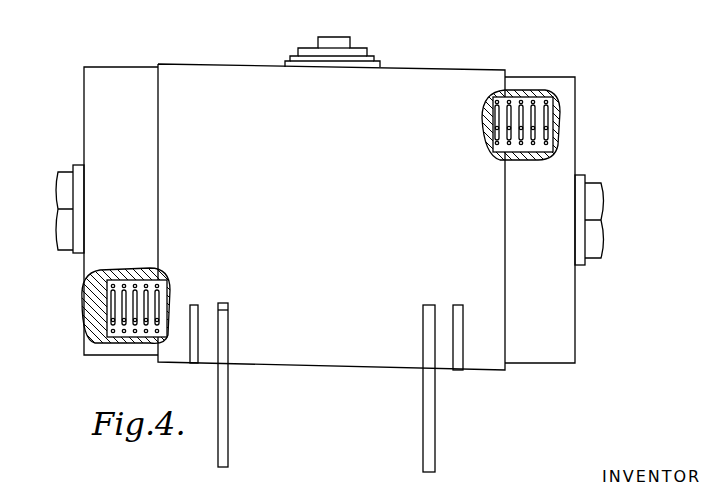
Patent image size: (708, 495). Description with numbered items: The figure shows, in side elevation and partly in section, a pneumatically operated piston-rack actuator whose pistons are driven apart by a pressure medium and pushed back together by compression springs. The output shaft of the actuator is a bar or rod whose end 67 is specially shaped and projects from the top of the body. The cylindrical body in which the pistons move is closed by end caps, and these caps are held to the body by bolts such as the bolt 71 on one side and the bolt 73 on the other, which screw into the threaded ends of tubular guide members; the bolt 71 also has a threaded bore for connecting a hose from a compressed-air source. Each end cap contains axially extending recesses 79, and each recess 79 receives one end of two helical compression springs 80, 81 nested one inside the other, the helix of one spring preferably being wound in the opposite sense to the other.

The end of bar or rod 67 is at (333, 41).
The bolt 71 is at (60, 195).
The bolt 73 is at (603, 218).
The axially extending recess 79 is at (321, 220).
The compression spring 80 is at (330, 217).
The compression spring 81 is at (497, 128).